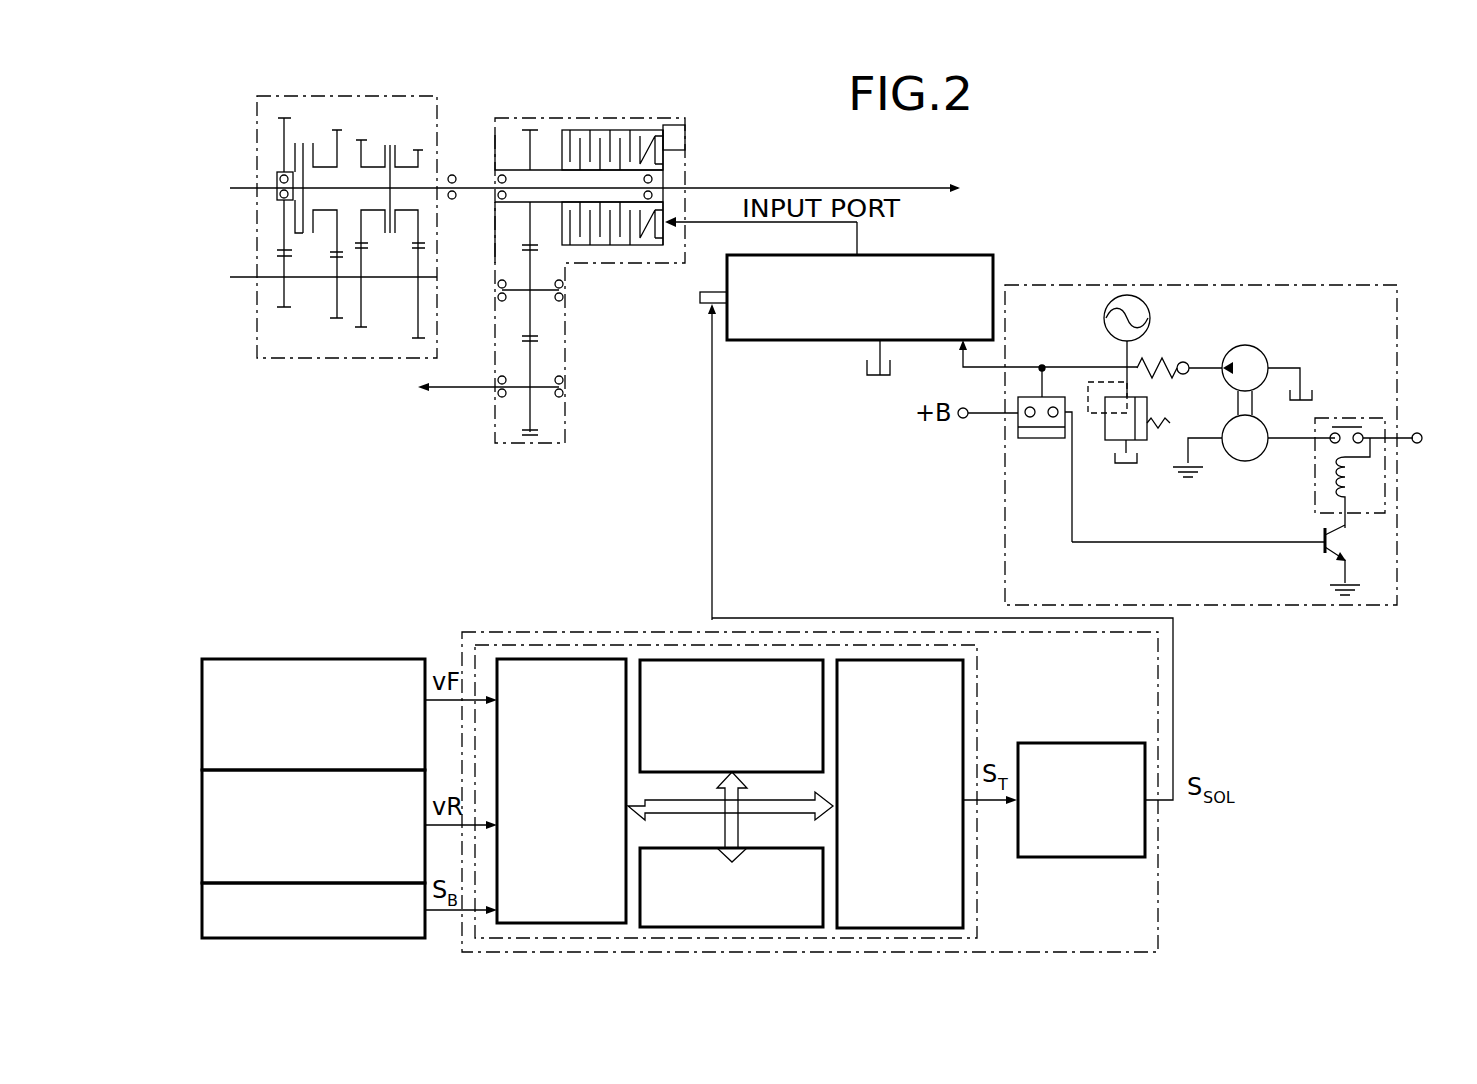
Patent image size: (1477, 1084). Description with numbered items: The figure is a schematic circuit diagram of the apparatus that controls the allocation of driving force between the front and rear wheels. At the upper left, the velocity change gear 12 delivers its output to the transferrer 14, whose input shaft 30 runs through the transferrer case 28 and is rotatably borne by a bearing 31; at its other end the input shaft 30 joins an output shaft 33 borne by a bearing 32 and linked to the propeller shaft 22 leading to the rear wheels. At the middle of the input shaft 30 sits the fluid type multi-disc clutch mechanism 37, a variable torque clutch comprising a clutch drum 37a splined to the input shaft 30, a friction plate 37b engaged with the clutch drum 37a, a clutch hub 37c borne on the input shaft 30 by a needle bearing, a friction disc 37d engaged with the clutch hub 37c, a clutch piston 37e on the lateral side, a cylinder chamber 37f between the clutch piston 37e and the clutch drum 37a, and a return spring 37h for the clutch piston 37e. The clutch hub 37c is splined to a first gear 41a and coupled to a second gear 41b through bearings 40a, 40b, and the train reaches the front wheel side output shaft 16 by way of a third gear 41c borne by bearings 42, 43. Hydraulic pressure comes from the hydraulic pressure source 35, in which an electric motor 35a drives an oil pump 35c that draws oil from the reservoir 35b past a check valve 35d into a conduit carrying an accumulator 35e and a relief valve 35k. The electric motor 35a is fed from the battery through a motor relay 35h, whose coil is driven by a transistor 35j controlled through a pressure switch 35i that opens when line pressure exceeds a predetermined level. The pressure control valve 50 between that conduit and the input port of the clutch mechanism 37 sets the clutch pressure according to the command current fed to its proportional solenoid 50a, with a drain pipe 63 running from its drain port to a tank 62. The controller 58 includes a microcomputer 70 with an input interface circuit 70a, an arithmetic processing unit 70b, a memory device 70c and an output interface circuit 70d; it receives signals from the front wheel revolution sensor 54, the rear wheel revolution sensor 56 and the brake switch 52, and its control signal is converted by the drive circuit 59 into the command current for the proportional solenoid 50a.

The velocity change gear 12 is at (235, 150).
The transferrer 14 is at (518, 115).
The front wheel side output shaft 16 is at (480, 392).
The propeller shaft 22 is at (868, 188).
The transferrer case 28 is at (565, 128).
The input shaft 30 is at (500, 176).
The bearing 31 is at (500, 197).
The bearing 32 is at (665, 185).
The output shaft 33 is at (700, 190).
The hydraulic pressure source 35 is at (1340, 285).
The electric motor 35a is at (1240, 462).
The oil reservoir 35b is at (1312, 397).
The oil pump 35c is at (1268, 355).
The check valve 35d is at (1165, 365).
The accumulator 35e is at (1104, 318).
The motor relay 35h is at (1315, 480).
The pressure switch 35i is at (1040, 440).
The transistor 35j is at (1350, 540).
The relief valve 35k is at (1105, 440).
The fluid type multi-disc clutch mechanism 37 is at (642, 252).
The clutch drum 37a is at (642, 128).
The friction plate 37b is at (592, 140).
The clutch hub 37c is at (522, 168).
The friction disc 37d is at (600, 140).
The clutch piston 37e is at (660, 150).
The cylinder chamber 37f is at (665, 238).
The return spring 37h is at (672, 130).
The bearing 40a is at (502, 303).
The bearing 40b is at (562, 297).
The first gear 41a is at (527, 235).
The gear 41b is at (533, 330).
The third gear 41c is at (535, 425).
The bearing 42 is at (500, 380).
The bearing 43 is at (562, 392).
The pressure control valve 50 is at (990, 258).
The proportional solenoid 50a is at (703, 310).
The brake switch 52 is at (202, 910).
The front wheel revolution sensor 54 is at (202, 690).
The rear wheel revolution sensor 56 is at (202, 800).
The controller 58 is at (475, 632).
The drive circuit 59 is at (1122, 745).
The tank 62 is at (875, 380).
The drain pipe 63 is at (870, 352).
The microcomputer 70 is at (590, 645).
The input interface circuit 70a is at (518, 655).
The arithmetic processing unit 70b is at (655, 660).
The memory device 70c is at (748, 848).
The output interface circuit 70d is at (963, 905).